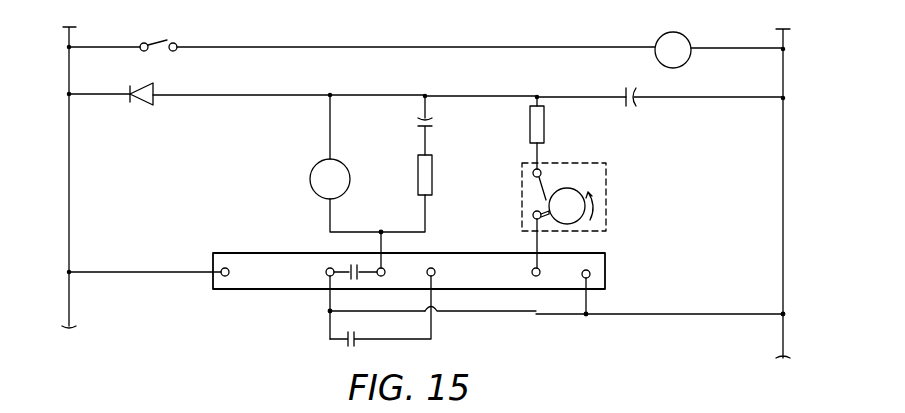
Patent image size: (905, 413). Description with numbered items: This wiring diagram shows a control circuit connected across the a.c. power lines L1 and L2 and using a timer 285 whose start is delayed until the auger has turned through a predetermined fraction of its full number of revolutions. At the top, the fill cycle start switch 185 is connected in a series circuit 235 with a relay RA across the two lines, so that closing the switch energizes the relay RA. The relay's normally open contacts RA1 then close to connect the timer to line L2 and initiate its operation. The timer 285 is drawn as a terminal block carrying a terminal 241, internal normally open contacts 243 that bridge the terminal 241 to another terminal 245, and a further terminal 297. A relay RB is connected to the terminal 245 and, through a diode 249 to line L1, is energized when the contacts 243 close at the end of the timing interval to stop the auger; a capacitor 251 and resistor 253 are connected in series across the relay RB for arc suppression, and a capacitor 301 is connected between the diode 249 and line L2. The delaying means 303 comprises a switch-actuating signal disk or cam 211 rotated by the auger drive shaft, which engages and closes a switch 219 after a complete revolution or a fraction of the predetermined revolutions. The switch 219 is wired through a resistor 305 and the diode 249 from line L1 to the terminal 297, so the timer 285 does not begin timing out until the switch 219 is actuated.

The power line L1 is at (69, 140).
The power line L2 is at (783, 180).
The fill cycle start switch 185 is at (157, 43).
The series circuit 235 is at (340, 47).
The relay RA is at (686, 36).
The diode 249 is at (146, 102).
The capacitor 301 is at (640, 108).
The relay RB is at (348, 172).
The capacitor 251 is at (438, 124).
The resistor 253 is at (436, 184).
The resistor 305 is at (548, 124).
The delay means 303 is at (606, 197).
The switch 219 is at (545, 181).
The switch-actuating signal disk or cam 211 is at (568, 222).
The timer 285 is at (605, 258).
The terminal 241 is at (324, 272).
The normally open contacts 243 is at (351, 266).
The terminal 245 is at (385, 272).
The terminal 297 is at (532, 273).
The normally open contacts RA1 is at (348, 348).